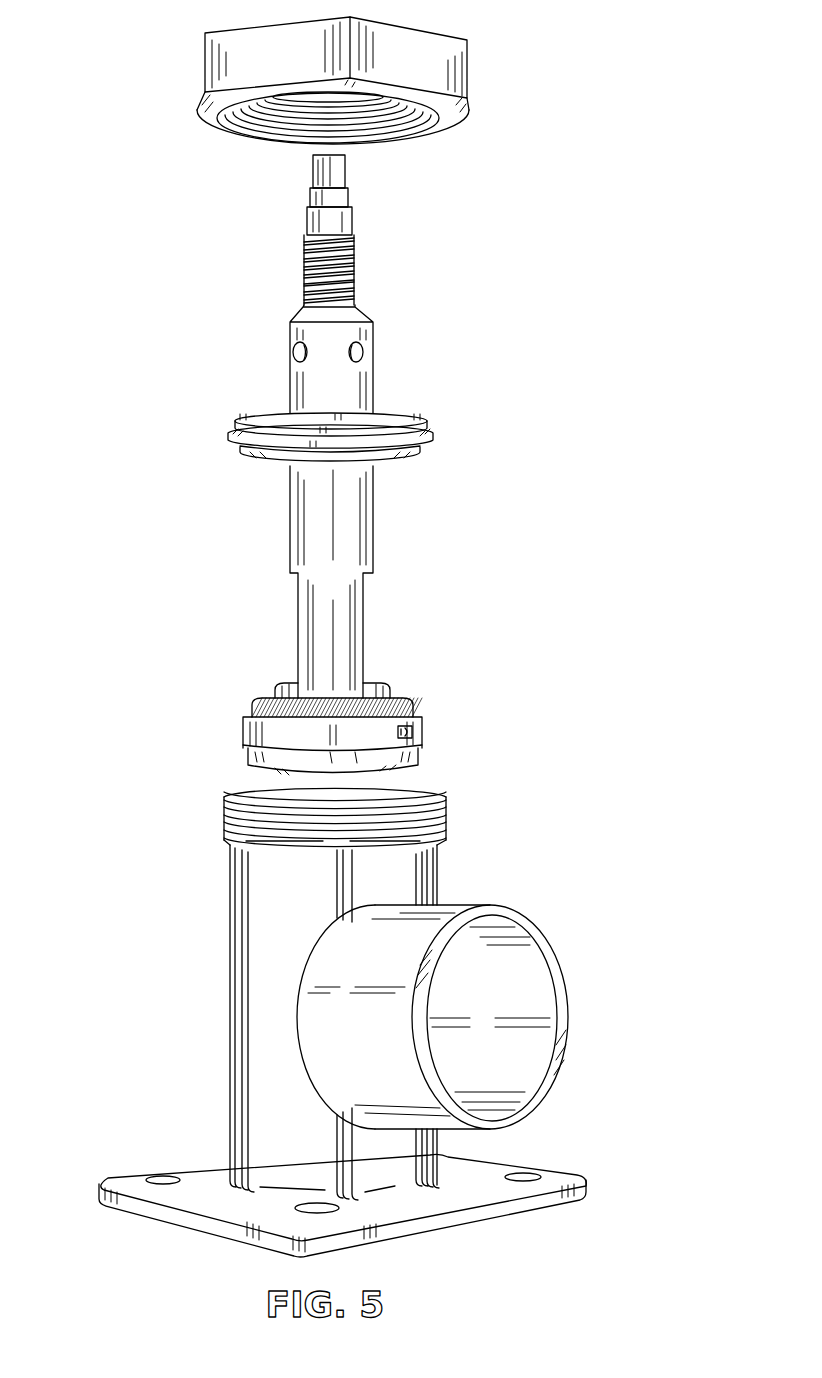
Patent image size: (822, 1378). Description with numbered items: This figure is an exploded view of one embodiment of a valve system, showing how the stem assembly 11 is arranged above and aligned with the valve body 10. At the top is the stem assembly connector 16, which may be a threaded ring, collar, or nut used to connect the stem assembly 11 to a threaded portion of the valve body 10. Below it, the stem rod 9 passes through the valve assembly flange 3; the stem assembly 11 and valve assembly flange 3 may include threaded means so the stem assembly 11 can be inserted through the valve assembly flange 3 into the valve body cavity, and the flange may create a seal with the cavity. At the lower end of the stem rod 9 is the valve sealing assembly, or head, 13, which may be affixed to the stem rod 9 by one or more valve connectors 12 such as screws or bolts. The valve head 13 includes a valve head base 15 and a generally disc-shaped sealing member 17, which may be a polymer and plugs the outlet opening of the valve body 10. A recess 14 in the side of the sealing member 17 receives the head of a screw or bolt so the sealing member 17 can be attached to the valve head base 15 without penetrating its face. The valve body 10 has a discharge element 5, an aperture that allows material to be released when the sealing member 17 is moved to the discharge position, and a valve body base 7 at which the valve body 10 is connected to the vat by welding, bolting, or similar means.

The valve assembly flange 3 is at (232, 437).
The discharge element 5 is at (527, 918).
The valve body base 7 is at (575, 1190).
The stem rod 9 is at (297, 590).
The valve body 10 is at (88, 1207).
The stem assembly 11 is at (517, 10).
The valve connector 12 is at (283, 688).
The valve sealing assembly 13 is at (462, 697).
The recess 14 is at (407, 735).
The valve head base 15 is at (255, 703).
The stem assembly connector 16 is at (210, 68).
The sealing member 17 is at (265, 728).